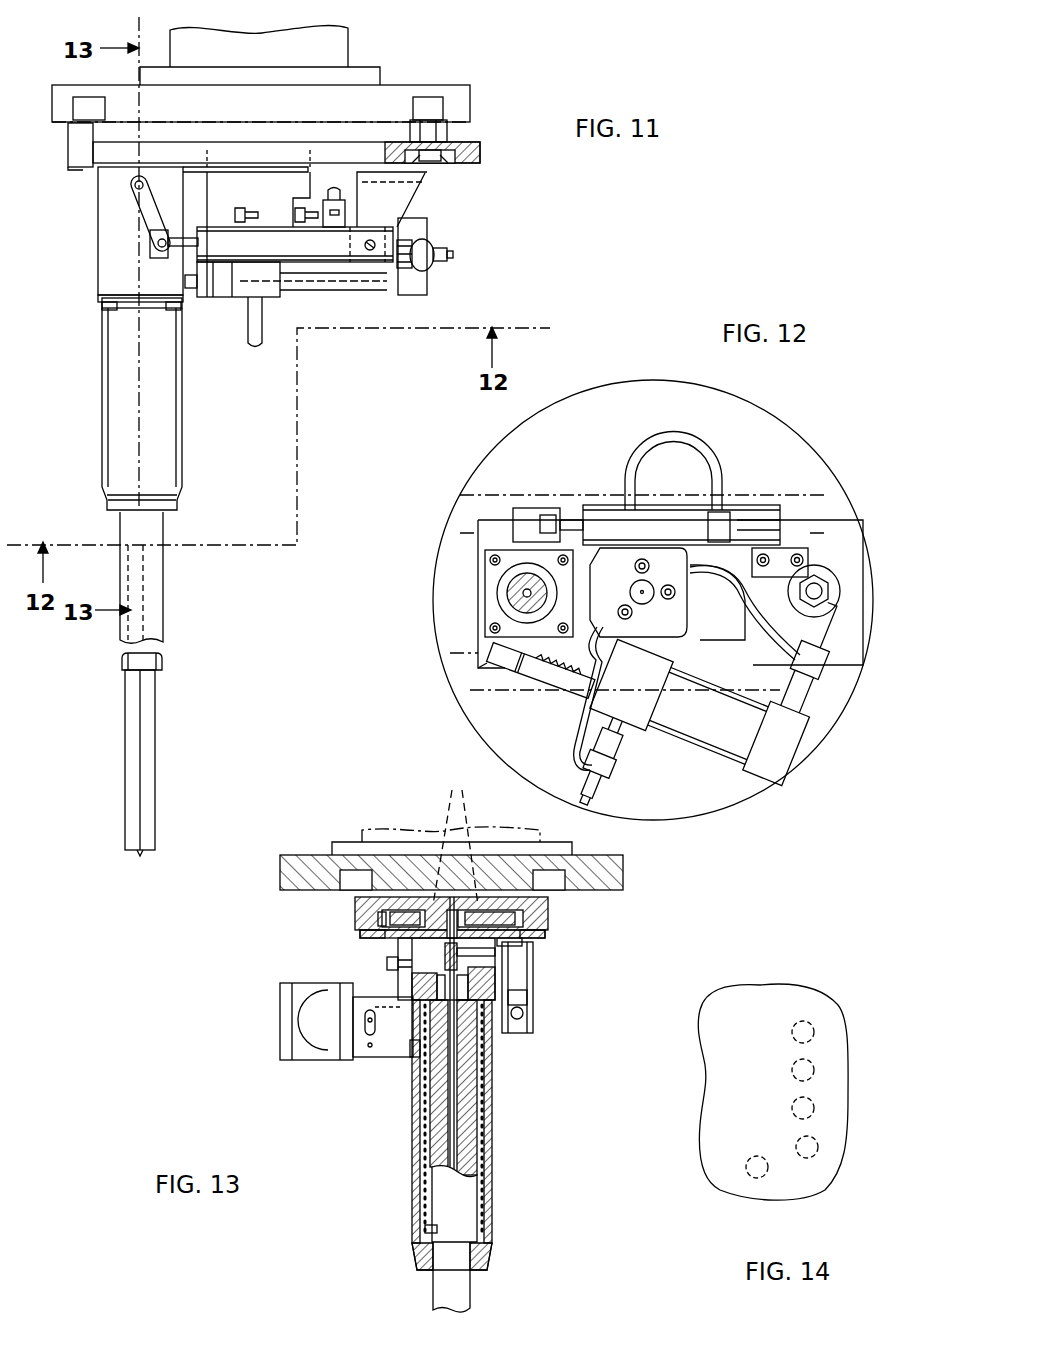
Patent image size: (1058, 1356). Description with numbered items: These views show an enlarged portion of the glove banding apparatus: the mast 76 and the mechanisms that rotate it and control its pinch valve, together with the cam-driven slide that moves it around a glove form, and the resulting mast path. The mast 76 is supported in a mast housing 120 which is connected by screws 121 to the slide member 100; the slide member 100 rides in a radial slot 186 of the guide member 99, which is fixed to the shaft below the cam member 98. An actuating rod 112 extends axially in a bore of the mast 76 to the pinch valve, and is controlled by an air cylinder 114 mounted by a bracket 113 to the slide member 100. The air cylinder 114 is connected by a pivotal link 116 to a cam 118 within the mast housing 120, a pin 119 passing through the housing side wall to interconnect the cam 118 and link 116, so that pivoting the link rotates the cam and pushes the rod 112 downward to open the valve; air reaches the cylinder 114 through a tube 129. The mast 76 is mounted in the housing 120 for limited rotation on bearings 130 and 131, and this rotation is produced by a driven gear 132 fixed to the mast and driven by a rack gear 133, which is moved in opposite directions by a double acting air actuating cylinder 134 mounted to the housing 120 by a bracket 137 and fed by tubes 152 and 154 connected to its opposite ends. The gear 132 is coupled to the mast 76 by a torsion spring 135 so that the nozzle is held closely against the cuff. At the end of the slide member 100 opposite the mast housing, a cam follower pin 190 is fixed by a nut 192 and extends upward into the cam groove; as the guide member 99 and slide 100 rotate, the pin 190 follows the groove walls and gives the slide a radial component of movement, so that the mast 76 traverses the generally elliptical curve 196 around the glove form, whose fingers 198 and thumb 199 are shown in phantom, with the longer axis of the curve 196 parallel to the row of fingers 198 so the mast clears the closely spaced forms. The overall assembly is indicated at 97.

In FIG. 11, the mast 76 is at (163, 617).
In FIG. 13, the mast 76 is at (470, 1287).
In FIG. 13, the assembly 97 is at (262, 902).
In FIG. 11, the cam member 98 is at (410, 85).
In FIG. 12, the cam member 98 is at (745, 405).
In FIG. 13, the cam member 98 is at (625, 870).
In FIG. 12, the guide member 99 is at (500, 490).
In FIG. 13, the guide member 99 is at (550, 905).
In FIG. 11, the slide member 100 is at (480, 152).
In FIG. 12, the slide member 100 is at (853, 662).
In FIG. 13, the slide member 100 is at (525, 920).
In FIG. 11, the actuating rod 112 is at (128, 855).
In FIG. 13, the actuating rod 112 is at (462, 1152).
In FIG. 11, the bracket 113 is at (420, 210).
In FIG. 12, the bracket 113 is at (790, 572).
In FIG. 11, the air cylinder 114 is at (320, 262).
In FIG. 12, the air cylinder 114 is at (605, 520).
In FIG. 11, the pivotal link 116 is at (145, 210).
In FIG. 13, the pivotal link 116 is at (535, 973).
In FIG. 13, the cam 118 is at (440, 962).
In FIG. 13, the pin 119 is at (505, 955).
In FIG. 11, the mast housing 120 is at (108, 372).
In FIG. 12, the mast housing 120 is at (488, 594).
In FIG. 13, the mast housing 120 is at (493, 1043).
In FIG. 13, the screws 121 is at (463, 836).
In FIG. 12, the tube 129 is at (651, 434).
In FIG. 13, the bearing 130 is at (520, 993).
In FIG. 13, the bearing 131 is at (488, 1256).
In FIG. 13, the driven gear 132 is at (408, 1060).
In FIG. 12, the rack gear 133 is at (553, 665).
In FIG. 13, the rack gear 133 is at (398, 1020).
In FIG. 12, the air actuating cylinder 134 is at (727, 737).
In FIG. 13, the torsion spring 135 is at (425, 1160).
In FIG. 12, the bracket 137 is at (487, 680).
In FIG. 13, the bracket 137 is at (390, 1053).
In FIG. 12, the tube 152 is at (575, 738).
In FIG. 12, the tube 154 is at (745, 616).
In FIG. 13, the slot 186 is at (385, 918).
In FIG. 11, the cam follower pin 190 is at (443, 105).
In FIG. 13, the cam follower pin 190 is at (378, 936).
In FIG. 11, the nut 192 is at (432, 163).
In FIG. 12, the nut 192 is at (828, 585).
In FIG. 13, the nut 192 is at (548, 945).
In FIG. 14, the elliptical curve 196 is at (840, 1168).
In FIG. 14, the fingers 198 is at (815, 1033).
In FIG. 14, the thumb 199 is at (765, 1175).